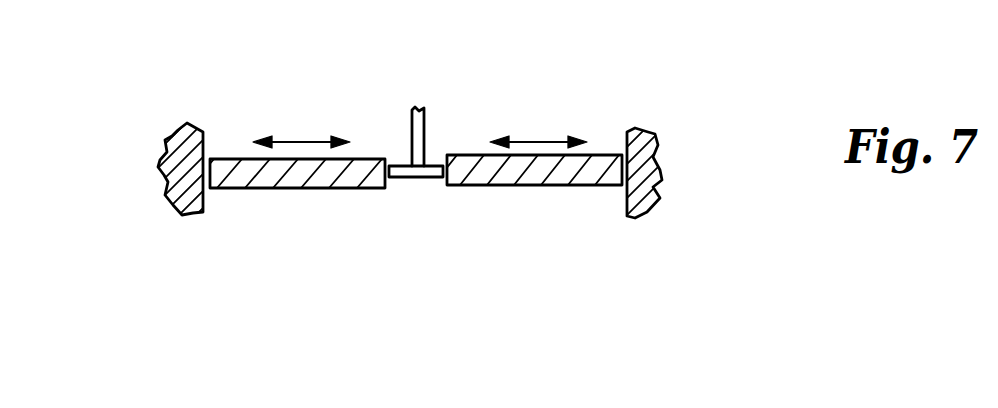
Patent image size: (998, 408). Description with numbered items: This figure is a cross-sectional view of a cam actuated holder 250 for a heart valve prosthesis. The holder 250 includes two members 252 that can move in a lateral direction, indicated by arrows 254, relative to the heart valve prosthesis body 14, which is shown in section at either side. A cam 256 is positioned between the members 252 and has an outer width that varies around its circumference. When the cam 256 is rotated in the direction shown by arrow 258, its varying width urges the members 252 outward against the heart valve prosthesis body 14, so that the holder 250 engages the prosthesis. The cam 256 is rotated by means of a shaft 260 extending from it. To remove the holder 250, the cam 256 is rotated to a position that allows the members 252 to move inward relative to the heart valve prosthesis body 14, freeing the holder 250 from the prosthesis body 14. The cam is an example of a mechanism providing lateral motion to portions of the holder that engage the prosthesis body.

The heart valve prosthesis body 14 is at (180, 167).
The cam actuated holder 250 is at (525, 100).
The members 252 is at (232, 188).
The arrows 254 is at (290, 142).
The cam 256 is at (397, 178).
The arrow 258 is at (435, 136).
The shaft 260 is at (398, 134).